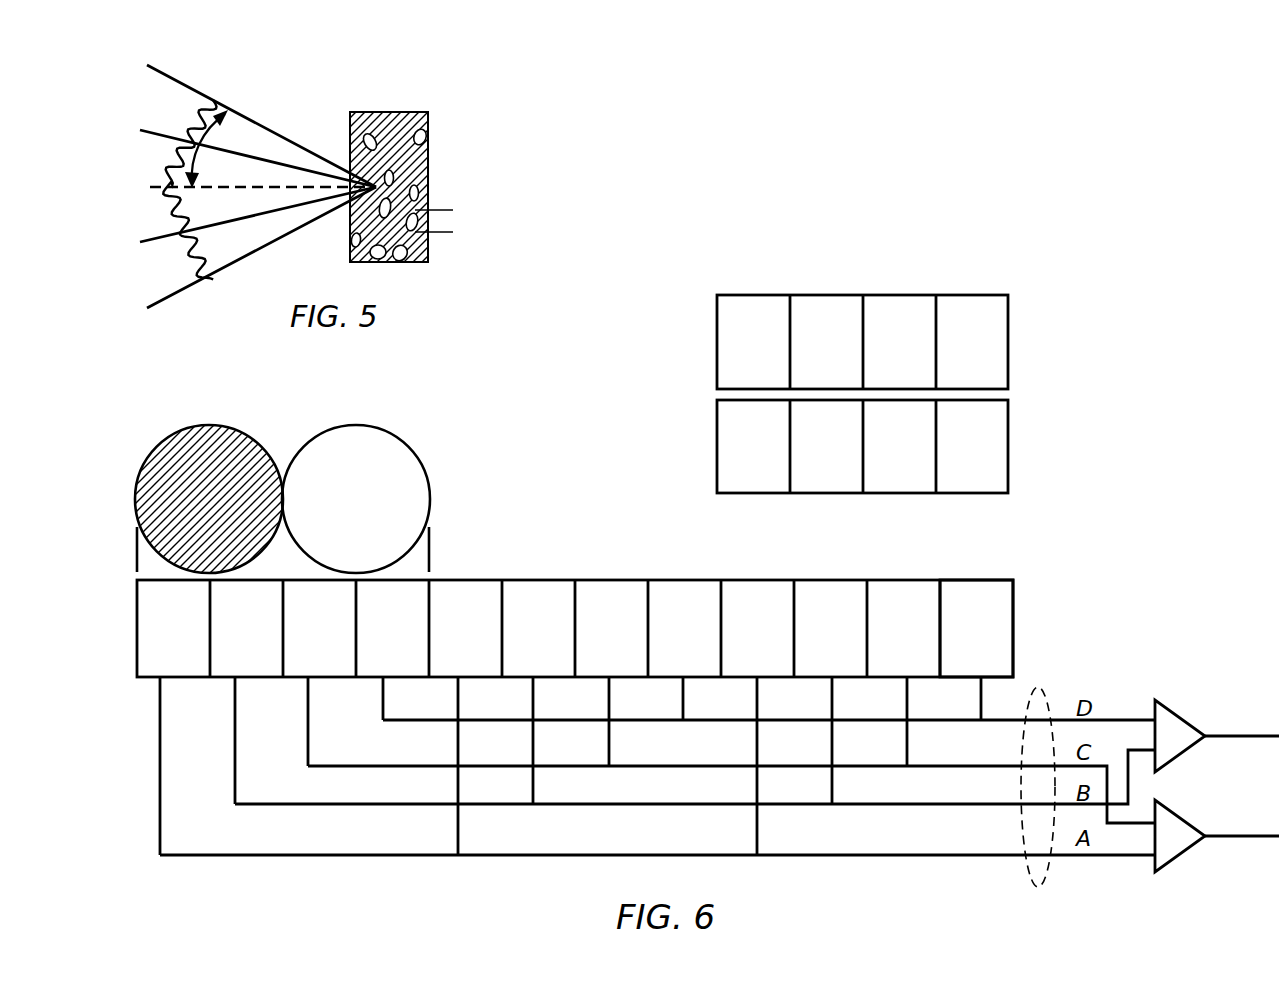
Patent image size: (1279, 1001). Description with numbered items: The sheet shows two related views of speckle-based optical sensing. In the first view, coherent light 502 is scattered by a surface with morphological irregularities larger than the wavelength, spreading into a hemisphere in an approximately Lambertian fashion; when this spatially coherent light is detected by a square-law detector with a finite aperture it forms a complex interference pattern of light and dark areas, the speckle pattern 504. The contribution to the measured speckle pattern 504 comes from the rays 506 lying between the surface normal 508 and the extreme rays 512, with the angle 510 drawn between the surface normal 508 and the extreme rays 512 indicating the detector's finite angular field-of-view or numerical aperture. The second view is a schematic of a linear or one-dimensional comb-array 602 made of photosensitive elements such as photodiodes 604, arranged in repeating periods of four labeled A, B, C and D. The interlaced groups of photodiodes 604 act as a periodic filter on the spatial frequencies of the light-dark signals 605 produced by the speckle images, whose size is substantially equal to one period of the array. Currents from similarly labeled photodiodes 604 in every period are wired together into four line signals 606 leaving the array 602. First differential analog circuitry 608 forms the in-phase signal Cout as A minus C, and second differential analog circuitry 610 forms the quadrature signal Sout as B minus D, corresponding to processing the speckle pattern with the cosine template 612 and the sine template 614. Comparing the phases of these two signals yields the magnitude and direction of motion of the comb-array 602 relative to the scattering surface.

In FIG. 5, the light 502 is at (168, 166).
In FIG. 5, the speckle pattern 504 is at (408, 98).
In FIG. 5, the rays 506 is at (221, 151).
In FIG. 5, the surface normal 508 is at (151, 187).
In FIG. 5, the half angle theta 510 is at (210, 162).
In FIG. 5, the extreme rays 512 is at (239, 115).
In FIG. 6, the 1D comb-array 602 is at (1050, 626).
In FIG. 6, the photodiodes 604 is at (973, 580).
In FIG. 6, the light-dark signals 605 is at (448, 497).
In FIG. 6, the line signals 606 is at (1040, 689).
In FIG. 6, the first differential analog circuitry 608 is at (1172, 860).
In FIG. 6, the second differential analog circuitry 610 is at (1171, 712).
In FIG. 6, the cosine template 612 is at (624, 340).
In FIG. 6, the sine template 614 is at (624, 436).